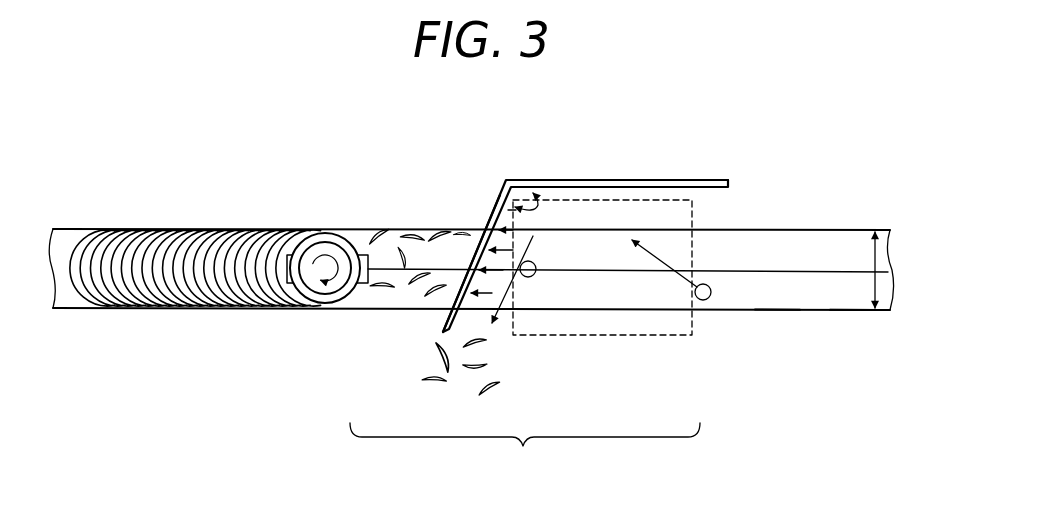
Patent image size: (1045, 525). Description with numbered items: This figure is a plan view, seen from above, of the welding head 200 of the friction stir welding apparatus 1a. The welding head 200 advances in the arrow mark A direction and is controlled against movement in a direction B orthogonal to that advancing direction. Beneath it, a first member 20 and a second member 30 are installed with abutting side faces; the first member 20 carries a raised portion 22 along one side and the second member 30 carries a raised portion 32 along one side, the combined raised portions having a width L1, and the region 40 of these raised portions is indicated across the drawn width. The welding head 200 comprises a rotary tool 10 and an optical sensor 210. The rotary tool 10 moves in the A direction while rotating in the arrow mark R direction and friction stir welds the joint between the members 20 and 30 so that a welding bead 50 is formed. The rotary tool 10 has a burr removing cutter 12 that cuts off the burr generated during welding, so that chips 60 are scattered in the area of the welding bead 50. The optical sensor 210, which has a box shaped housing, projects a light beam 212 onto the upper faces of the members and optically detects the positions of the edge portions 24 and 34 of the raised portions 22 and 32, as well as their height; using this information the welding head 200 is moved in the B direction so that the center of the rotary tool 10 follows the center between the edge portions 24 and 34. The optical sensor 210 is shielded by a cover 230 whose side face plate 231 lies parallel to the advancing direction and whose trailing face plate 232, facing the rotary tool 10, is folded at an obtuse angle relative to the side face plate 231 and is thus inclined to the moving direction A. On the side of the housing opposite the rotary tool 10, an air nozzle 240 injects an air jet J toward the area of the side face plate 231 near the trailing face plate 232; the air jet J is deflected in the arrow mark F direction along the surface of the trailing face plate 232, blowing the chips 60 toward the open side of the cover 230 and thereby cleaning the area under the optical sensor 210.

The friction stir welding apparatus 1a is at (734, 96).
The rotary tool 10 is at (322, 233).
The burr removing cutter 12 is at (291, 257).
The first member 20 is at (809, 203).
The raised portion 22 is at (852, 245).
The edge portion 24 is at (769, 229).
The second member 30 is at (812, 340).
The raised portion 32 is at (852, 300).
The edge portion 34 is at (776, 311).
The conveying passage 40 is at (893, 273).
The welding bead 50 is at (178, 295).
The chips 60 is at (470, 390).
The welding head 200 is at (562, 281).
The optical sensor 210 is at (630, 336).
The light beam 212 is at (535, 276).
The cover 230 is at (621, 152).
The side face plate 231 is at (643, 180).
The trailing face plate 232 is at (432, 320).
The air nozzle 240 is at (705, 284).
The width of the combined raised portions L1 is at (878, 238).
The rotation direction R is at (341, 256).
The air jet J is at (533, 236).
The deflection direction F is at (530, 295).
The advancing direction A is at (358, 132).
The lateral direction B is at (331, 75).